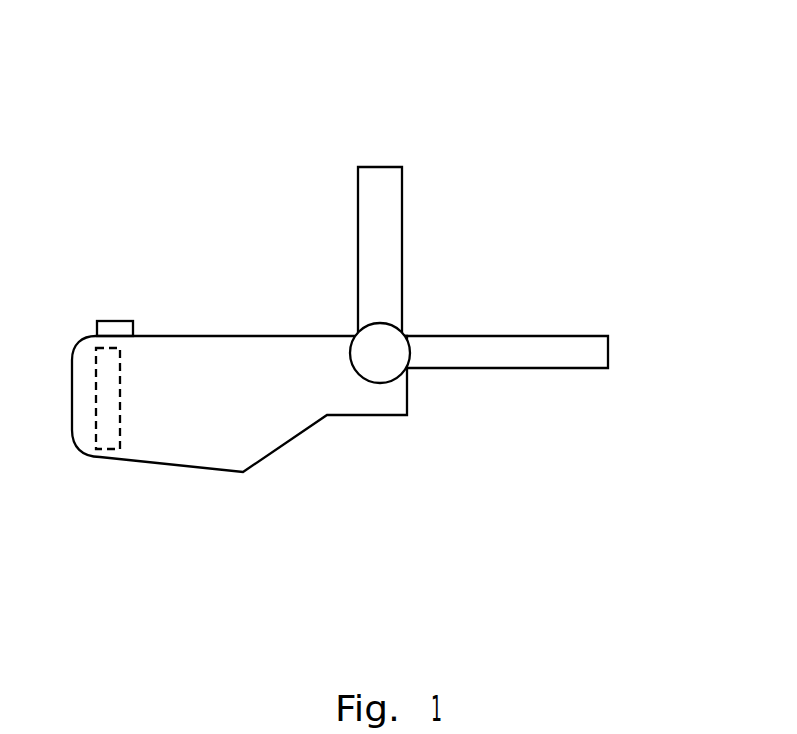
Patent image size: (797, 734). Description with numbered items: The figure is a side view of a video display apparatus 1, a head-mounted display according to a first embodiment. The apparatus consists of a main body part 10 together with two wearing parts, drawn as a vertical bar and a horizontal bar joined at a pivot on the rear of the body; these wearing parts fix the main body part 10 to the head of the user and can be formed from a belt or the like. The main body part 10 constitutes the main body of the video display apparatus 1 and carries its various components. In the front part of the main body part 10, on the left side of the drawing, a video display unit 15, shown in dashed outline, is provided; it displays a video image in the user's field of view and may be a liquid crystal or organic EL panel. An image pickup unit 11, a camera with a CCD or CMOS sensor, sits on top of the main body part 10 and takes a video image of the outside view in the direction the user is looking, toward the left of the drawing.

The video display apparatus 1 is at (588, 82).
The main body part 10 is at (222, 448).
The image pickup unit 11 is at (118, 320).
The video display unit 15 is at (119, 388).